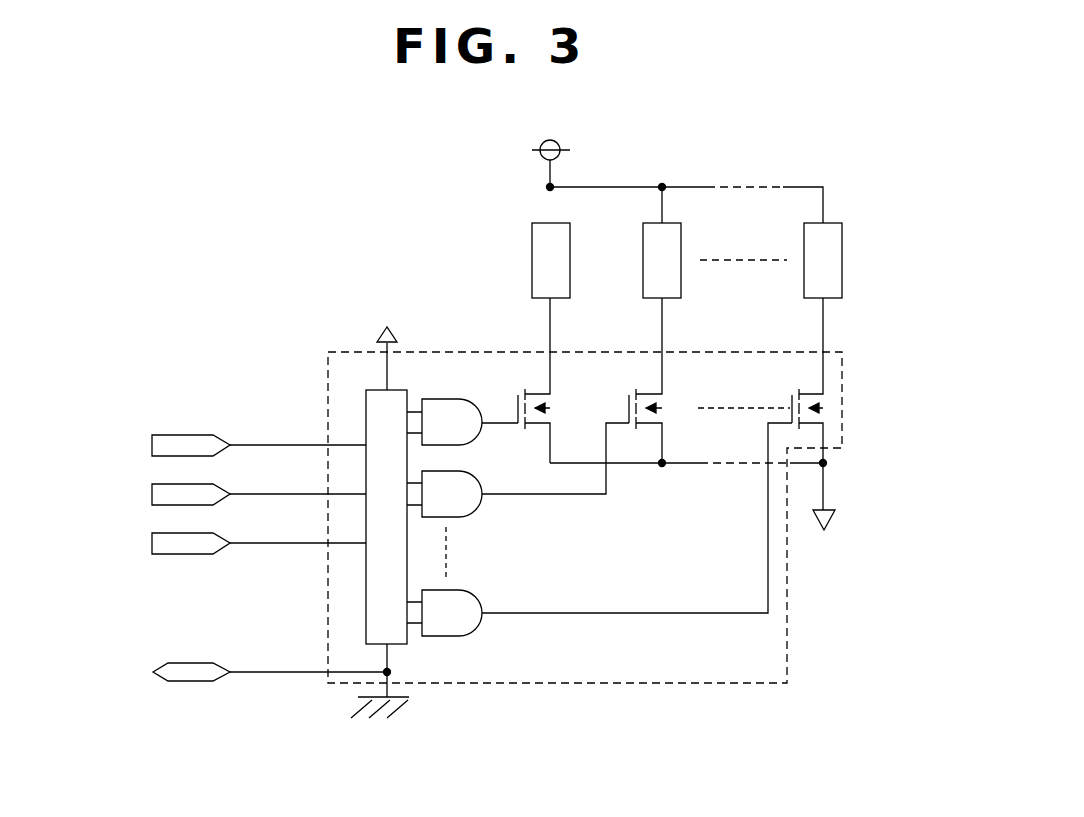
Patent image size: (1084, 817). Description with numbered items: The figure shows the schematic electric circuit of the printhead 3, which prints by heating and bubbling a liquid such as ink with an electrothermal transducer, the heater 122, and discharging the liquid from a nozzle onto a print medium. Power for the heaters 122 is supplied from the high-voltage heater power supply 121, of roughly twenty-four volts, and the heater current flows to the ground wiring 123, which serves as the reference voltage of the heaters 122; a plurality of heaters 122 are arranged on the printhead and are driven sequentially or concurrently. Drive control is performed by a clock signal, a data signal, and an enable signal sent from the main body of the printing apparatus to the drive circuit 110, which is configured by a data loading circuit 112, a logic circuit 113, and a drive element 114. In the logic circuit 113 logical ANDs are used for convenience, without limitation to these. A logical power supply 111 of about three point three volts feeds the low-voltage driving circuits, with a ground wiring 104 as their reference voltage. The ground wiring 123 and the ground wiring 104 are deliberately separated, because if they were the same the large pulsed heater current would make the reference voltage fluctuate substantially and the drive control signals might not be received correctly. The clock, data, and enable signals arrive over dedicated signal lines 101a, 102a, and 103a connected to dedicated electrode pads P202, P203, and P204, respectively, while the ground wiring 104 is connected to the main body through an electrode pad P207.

The printhead 3 is at (876, 187).
The drive circuit 110 is at (343, 352).
The logical power supply 111 is at (385, 327).
The data loading circuit 112 is at (385, 420).
The logic circuit 113 is at (450, 398).
The drive element 114 is at (535, 390).
The heater power supply 121 is at (540, 157).
The heater 122 is at (532, 237).
The ground wiring 123 is at (827, 492).
The dedicated signal line 101a is at (270, 423).
The dedicated signal line 102a is at (270, 474).
The dedicated signal line 103a is at (270, 523).
The ground wiring 104 is at (288, 673).
The electrode pad P202 is at (152, 446).
The electrode pad P203 is at (152, 495).
The electrode pad P204 is at (152, 544).
The electrode pad P207 is at (153, 673).